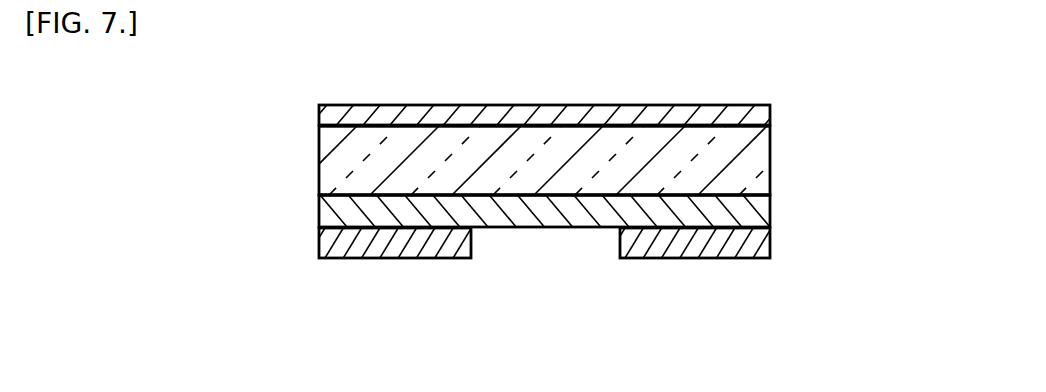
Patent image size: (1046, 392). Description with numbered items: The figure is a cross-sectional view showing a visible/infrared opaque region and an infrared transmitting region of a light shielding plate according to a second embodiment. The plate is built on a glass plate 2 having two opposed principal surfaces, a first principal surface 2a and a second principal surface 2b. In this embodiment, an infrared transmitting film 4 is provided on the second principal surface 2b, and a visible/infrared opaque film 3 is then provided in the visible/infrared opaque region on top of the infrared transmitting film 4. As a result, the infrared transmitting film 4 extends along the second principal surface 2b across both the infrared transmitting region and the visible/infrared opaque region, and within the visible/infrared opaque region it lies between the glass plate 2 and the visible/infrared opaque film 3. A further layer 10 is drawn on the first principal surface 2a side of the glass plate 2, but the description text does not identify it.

The protective layer 10 is at (770, 115).
The glass plate 2 is at (770, 163).
The first principal surface 2a is at (347, 128).
The second principal surface 2b is at (352, 192).
The infrared transmitting film 4 is at (543, 212).
The visible/infrared opaque film 3 is at (393, 257).